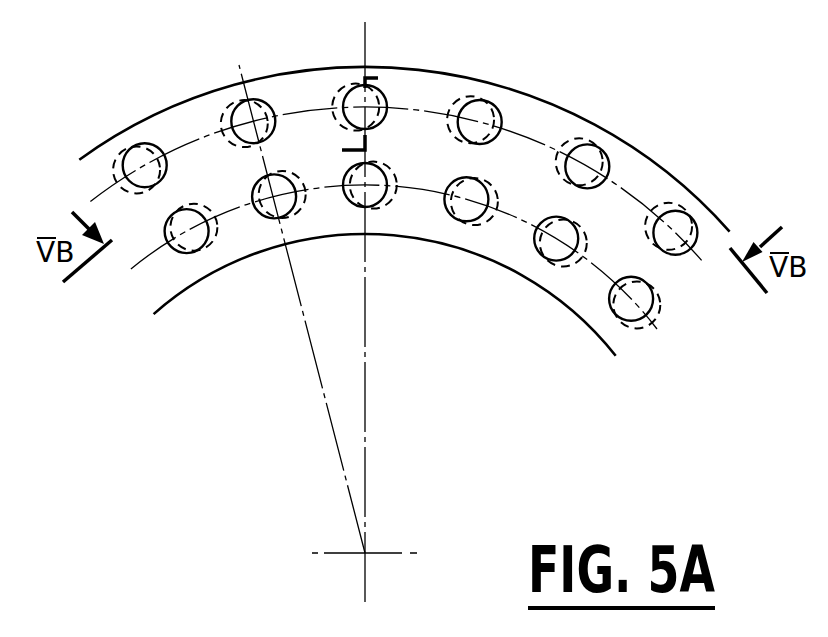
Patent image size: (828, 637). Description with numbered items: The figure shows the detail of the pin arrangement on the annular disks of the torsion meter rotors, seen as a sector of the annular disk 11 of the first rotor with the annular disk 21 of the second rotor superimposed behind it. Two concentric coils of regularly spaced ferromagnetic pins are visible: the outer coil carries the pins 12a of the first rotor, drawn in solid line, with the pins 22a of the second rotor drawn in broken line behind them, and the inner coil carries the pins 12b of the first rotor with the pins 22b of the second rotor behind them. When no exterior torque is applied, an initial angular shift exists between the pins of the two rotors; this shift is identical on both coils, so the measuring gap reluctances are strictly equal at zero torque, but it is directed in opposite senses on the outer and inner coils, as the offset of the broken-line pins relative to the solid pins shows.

The annular disk 11 is at (422, 82).
The annular disk 21 is at (243, 237).
The pin 12a is at (609, 167).
The pin 12b is at (534, 236).
The pin 22a is at (563, 138).
The pin 22b is at (578, 262).